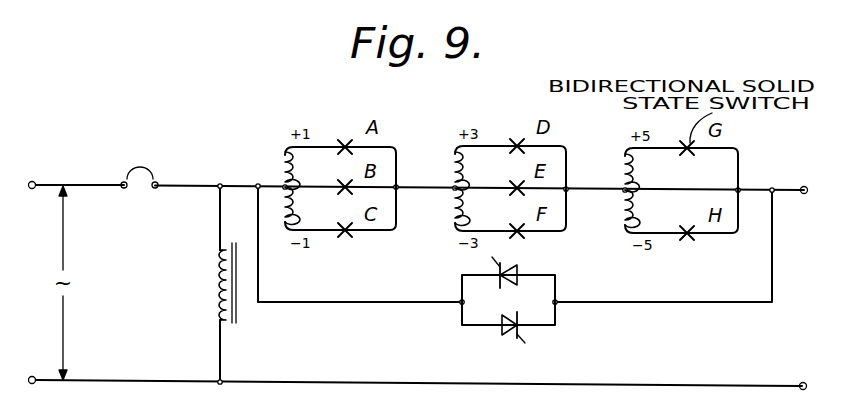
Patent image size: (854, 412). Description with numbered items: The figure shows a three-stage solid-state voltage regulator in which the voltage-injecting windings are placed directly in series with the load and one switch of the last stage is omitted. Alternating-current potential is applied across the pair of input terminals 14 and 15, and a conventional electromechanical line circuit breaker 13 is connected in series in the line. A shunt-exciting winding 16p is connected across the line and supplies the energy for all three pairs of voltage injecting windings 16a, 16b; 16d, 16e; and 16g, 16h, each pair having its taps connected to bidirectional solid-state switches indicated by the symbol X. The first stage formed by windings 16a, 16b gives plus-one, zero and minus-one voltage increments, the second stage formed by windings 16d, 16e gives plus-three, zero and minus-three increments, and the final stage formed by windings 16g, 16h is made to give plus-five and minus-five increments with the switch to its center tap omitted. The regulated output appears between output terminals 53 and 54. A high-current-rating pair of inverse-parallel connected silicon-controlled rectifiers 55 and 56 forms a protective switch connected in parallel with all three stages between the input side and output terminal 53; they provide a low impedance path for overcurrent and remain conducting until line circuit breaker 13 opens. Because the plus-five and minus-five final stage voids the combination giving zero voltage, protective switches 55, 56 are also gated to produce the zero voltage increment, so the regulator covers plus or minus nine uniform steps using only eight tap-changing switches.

The line circuit breaker 13 is at (146, 172).
The input terminal 14 is at (36, 181).
The input terminal 15 is at (33, 376).
The voltage injecting winding 16a is at (284, 163).
The voltage injecting winding 16b is at (284, 208).
The voltage injecting winding 16d is at (454, 166).
The voltage injecting winding 16e is at (454, 210).
The voltage injecting winding 16g is at (624, 166).
The voltage injecting winding 16h is at (624, 208).
The shunt-exciting winding 16p is at (214, 285).
The output terminal 53 is at (804, 185).
The output terminal 54 is at (803, 381).
The silicon-controlled rectifier 55 is at (517, 271).
The silicon-controlled rectifier 56 is at (505, 331).